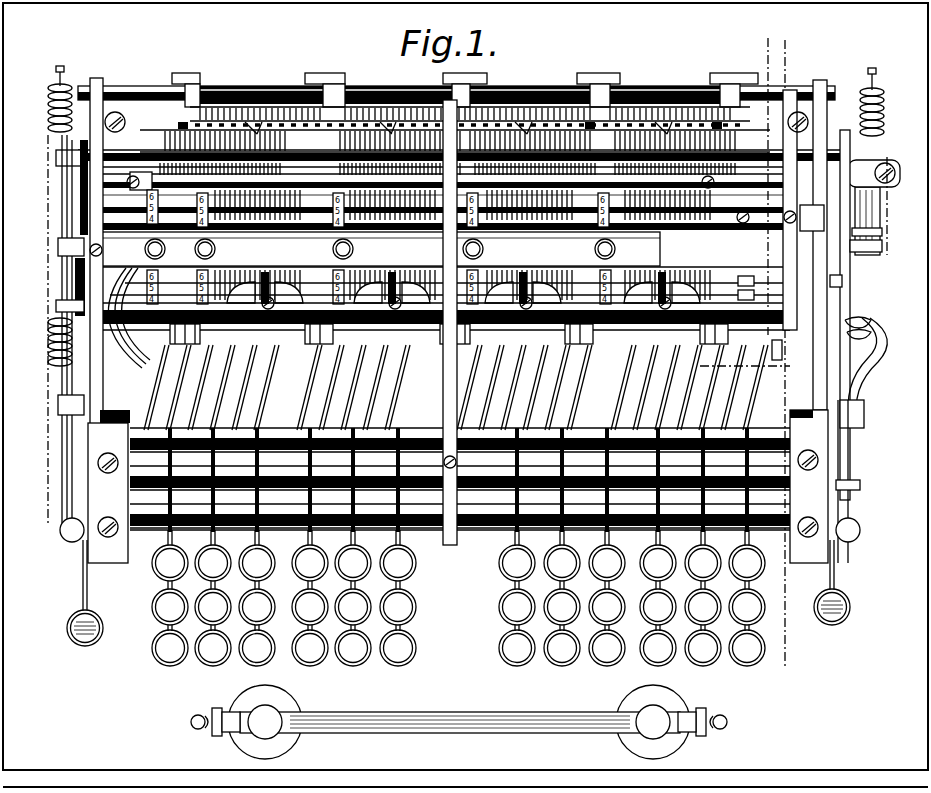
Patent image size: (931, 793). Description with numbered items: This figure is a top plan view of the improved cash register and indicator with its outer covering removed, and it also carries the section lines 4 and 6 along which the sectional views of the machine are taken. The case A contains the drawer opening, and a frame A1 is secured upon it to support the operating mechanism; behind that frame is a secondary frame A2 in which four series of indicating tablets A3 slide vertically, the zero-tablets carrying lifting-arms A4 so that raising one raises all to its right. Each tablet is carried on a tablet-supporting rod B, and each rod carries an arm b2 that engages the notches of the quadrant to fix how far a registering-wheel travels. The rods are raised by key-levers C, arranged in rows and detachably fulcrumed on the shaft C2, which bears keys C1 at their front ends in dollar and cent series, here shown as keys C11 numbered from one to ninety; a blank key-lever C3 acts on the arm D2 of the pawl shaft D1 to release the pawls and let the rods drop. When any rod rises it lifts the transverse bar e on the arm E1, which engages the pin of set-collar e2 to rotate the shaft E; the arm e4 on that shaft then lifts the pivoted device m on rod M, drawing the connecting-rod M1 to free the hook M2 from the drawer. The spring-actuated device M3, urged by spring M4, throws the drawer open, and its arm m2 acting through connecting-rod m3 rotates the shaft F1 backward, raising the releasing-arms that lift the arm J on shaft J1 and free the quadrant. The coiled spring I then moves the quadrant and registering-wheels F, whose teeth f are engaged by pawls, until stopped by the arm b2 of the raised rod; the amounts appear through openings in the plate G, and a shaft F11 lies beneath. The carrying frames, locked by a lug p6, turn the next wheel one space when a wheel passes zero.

The case A is at (484, 403).
The frame A1 is at (104, 405).
The secondary frame or case A2 is at (174, 76).
The indicating plates or tablets A3 is at (268, 88).
The lifting-arms A4 is at (198, 90).
The tablet-supporting rods B is at (205, 112).
The arm b2 is at (455, 138).
The key-levers C is at (296, 636).
The keys C1 is at (456, 387).
The keys C11 is at (345, 578).
The shaft C2 is at (402, 545).
The blank key-lever C3 is at (850, 470).
The pawl-supporting shaft D1 is at (124, 88).
The arm D2 is at (824, 82).
The shaft E is at (442, 317).
The arm E1 is at (662, 150).
The transverse bar e is at (185, 130).
The set-collar e2 is at (461, 321).
The arm e4 is at (772, 234).
The registering-wheels F is at (442, 282).
The shaft F1 is at (454, 261).
The lever F11 is at (450, 262).
The teeth or serrations f is at (379, 247).
The plate G is at (377, 249).
The coiled spring I is at (445, 206).
The arm J is at (445, 221).
The shaft J1 is at (130, 188).
The rod M is at (880, 200).
The connecting-rod M1 is at (880, 270).
The pivoted hook or catch M2 is at (882, 248).
The pivoted spring-actuated device M3 is at (876, 372).
The spring M4 is at (884, 120).
The pivoted device m is at (882, 232).
The arm m2 is at (753, 363).
The connecting-rod m3 is at (753, 291).
The lug or arm p6 is at (445, 341).
The section line 4 4 is at (745, 360).
The section line 6 6 is at (769, 183).